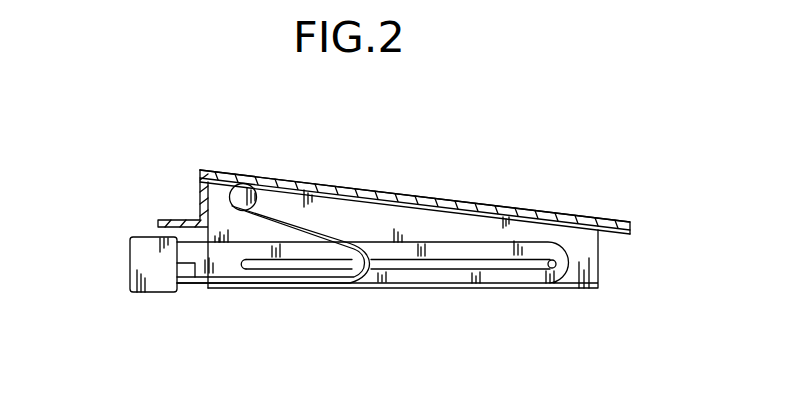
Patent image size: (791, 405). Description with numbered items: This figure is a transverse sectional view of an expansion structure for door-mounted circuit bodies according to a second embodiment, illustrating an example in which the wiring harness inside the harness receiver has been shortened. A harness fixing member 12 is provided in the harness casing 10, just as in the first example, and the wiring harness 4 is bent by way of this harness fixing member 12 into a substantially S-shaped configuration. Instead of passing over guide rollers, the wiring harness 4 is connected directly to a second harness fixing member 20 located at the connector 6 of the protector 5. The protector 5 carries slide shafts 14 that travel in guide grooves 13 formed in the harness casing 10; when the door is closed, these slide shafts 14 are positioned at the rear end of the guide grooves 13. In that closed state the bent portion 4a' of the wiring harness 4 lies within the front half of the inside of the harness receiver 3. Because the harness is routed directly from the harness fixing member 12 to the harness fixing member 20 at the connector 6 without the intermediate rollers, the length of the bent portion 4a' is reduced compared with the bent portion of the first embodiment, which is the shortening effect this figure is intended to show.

The harness receiver 3 is at (477, 207).
The wiring harness 4 is at (620, 233).
The bent portion 4a' is at (294, 205).
The protector 5 is at (232, 268).
The connector 6 is at (130, 274).
The harness casing 10 is at (601, 274).
The harness fixing member 12 is at (247, 202).
The guide grooves 13 is at (410, 262).
The slide shafts 14 is at (557, 265).
The harness fixing member 20 is at (184, 268).